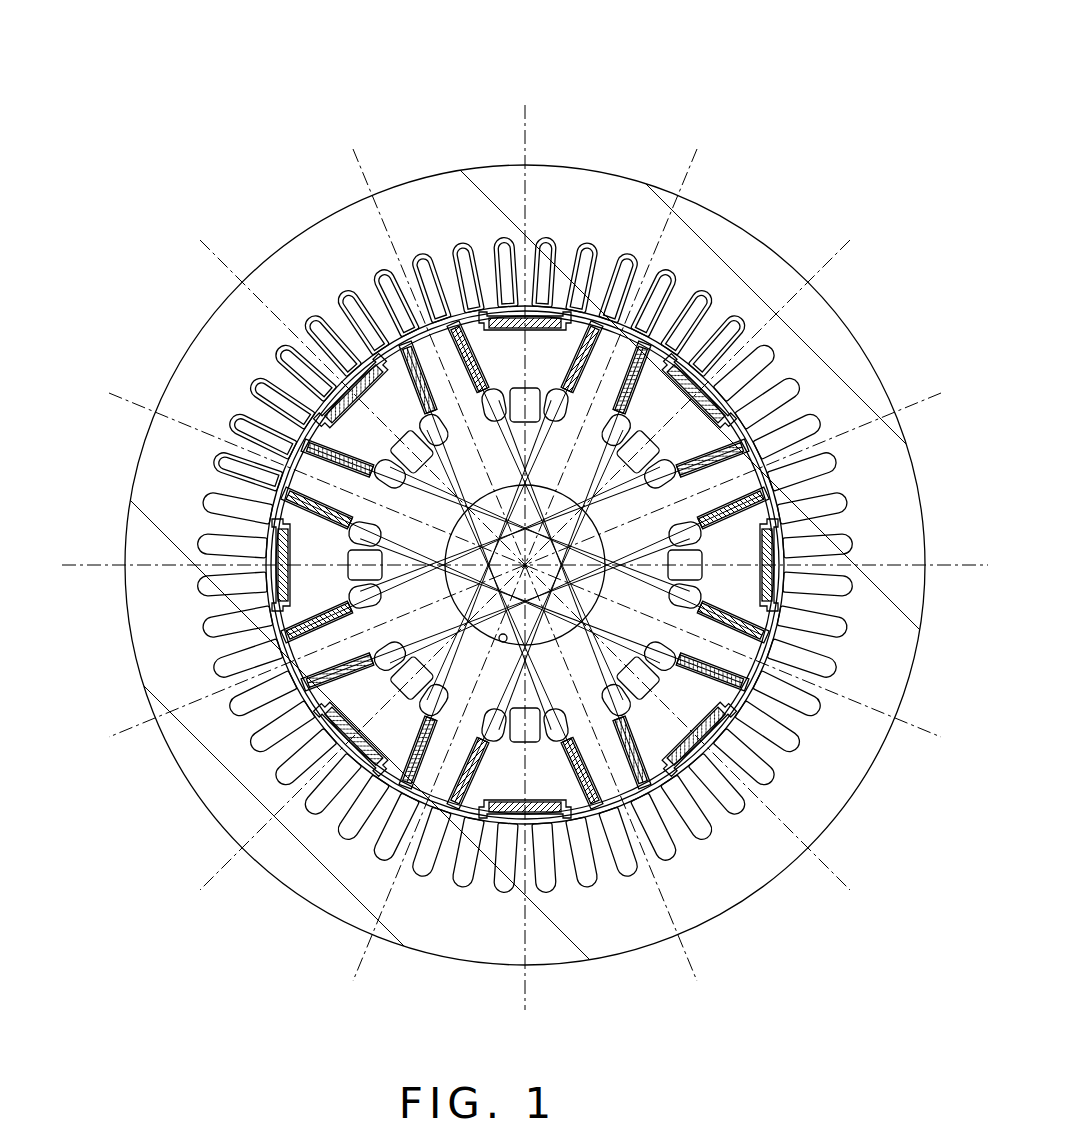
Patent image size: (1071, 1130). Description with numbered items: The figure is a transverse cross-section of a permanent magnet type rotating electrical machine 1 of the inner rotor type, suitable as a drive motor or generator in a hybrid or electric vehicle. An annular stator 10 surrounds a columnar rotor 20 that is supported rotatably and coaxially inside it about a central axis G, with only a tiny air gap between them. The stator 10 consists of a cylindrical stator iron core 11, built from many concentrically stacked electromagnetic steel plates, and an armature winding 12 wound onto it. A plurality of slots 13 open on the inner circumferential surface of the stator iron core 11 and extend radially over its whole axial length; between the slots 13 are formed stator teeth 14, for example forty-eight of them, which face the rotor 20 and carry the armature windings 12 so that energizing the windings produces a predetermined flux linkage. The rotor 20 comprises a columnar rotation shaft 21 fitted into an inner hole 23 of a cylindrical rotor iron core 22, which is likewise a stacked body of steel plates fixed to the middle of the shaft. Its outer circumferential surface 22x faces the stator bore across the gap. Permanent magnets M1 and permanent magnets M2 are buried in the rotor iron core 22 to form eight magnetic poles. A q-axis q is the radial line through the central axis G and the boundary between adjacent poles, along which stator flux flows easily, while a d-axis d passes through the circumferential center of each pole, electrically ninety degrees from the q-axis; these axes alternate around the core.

The rotating electrical machine 1 is at (672, 104).
The stator 10 is at (600, 167).
The stator iron core 11 is at (440, 190).
The armature winding 12 is at (546, 237).
The slot 13 is at (590, 240).
The stator tooth 14 is at (680, 298).
The rotor 20 is at (316, 652).
The rotation shaft 21 is at (499, 513).
The rotor iron core 22 is at (407, 787).
The outer circumferential surface 22x is at (300, 680).
The inner hole 23 is at (506, 644).
The permanent magnet M1 is at (512, 426).
The permanent magnet M2 is at (528, 331).
The central axis G is at (527, 567).
The d-axis d is at (522, 106).
The q-axis q is at (363, 137).